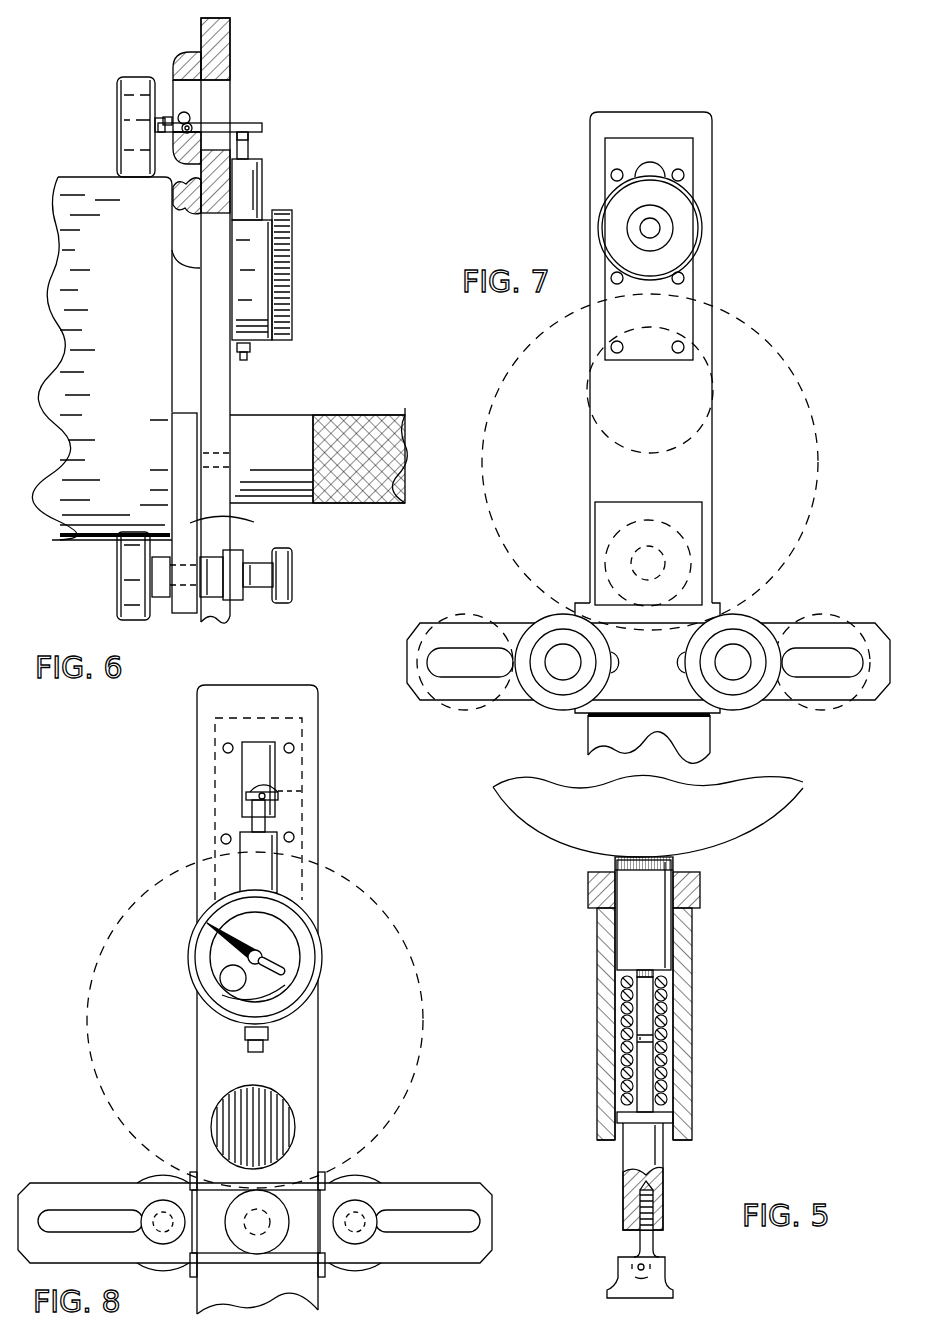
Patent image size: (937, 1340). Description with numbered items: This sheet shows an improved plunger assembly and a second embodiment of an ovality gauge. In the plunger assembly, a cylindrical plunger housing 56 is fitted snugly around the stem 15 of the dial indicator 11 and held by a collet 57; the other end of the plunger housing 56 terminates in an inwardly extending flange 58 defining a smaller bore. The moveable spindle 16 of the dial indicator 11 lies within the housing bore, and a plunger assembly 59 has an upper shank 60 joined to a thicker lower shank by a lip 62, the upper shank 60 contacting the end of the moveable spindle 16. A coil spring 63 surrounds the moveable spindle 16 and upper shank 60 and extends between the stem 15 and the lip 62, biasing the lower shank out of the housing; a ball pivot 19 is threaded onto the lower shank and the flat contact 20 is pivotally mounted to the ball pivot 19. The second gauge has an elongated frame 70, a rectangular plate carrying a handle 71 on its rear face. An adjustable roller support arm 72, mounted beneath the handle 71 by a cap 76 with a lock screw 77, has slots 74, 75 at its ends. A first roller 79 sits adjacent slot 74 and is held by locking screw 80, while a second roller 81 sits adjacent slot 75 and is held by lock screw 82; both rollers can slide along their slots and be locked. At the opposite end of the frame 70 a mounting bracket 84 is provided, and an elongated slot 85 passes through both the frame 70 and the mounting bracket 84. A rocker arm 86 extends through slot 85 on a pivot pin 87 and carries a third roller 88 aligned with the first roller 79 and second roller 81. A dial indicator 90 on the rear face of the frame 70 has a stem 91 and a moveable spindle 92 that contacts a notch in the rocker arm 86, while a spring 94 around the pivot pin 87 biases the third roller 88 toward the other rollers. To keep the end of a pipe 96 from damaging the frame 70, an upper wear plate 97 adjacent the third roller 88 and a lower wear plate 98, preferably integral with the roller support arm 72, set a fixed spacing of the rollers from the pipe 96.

In FIG. 5, the dial indicator 11 is at (764, 818).
In FIG. 5, the stem 15 is at (678, 861).
In FIG. 5, the moveable spindle 16 is at (645, 1006).
In FIG. 5, the ball pivot 19 is at (656, 1245).
In FIG. 5, the flat contact 20 is at (620, 1273).
In FIG. 5, the plunger housing 56 is at (692, 929).
In FIG. 5, the collet 57 is at (700, 890).
In FIG. 5, the flange 58 is at (670, 1143).
In FIG. 5, the plunger assembly 59 is at (624, 1170).
In FIG. 5, the upper shank 60 is at (645, 1071).
In FIG. 5, the lip 62 is at (665, 1116).
In FIG. 5, the coil spring 63 is at (662, 1047).
In FIG. 6, the frame 70 is at (232, 386).
In FIG. 7, the frame 70 is at (713, 185).
In FIG. 8, the frame 70 is at (319, 784).
In FIG. 6, the handle 71 is at (276, 415).
In FIG. 8, the handle 71 is at (290, 1106).
In FIG. 6, the roller support arm 72 is at (225, 522).
In FIG. 7, the roller support arm 72 is at (868, 630).
In FIG. 8, the roller support arm 72 is at (457, 1183).
In FIG. 7, the slot 74 is at (450, 650).
In FIG. 8, the slot 74 is at (466, 1210).
In FIG. 7, the slot 75 is at (826, 650).
In FIG. 8, the slot 75 is at (70, 1210).
In FIG. 6, the cap 76 is at (240, 603).
In FIG. 8, the cap 76 is at (296, 1238).
In FIG. 6, the lock screw 77 is at (292, 578).
In FIG. 8, the lock screw 77 is at (254, 1243).
In FIG. 7, the first roller 79 is at (545, 710).
In FIG. 8, the first roller 79 is at (362, 1178).
In FIG. 8, the locking screw 80 is at (368, 1245).
In FIG. 6, the second roller 81 is at (118, 576).
In FIG. 7, the second roller 81 is at (735, 712).
In FIG. 8, the second roller 81 is at (160, 1172).
In FIG. 6, the lock screw 82 is at (226, 560).
In FIG. 8, the lock screw 82 is at (155, 1237).
In FIG. 6, the mounting bracket 84 is at (185, 58).
In FIG. 7, the mounting bracket 84 is at (693, 150).
In FIG. 8, the mounting bracket 84 is at (258, 809).
In FIG. 6, the slot 85 is at (208, 80).
In FIG. 7, the slot 85 is at (636, 171).
In FIG. 8, the slot 85 is at (276, 763).
In FIG. 6, the rocker arm 86 is at (255, 124).
In FIG. 8, the rocker arm 86 is at (272, 800).
In FIG. 6, the pivot pin 87 is at (198, 122).
In FIG. 8, the pivot pin 87 is at (268, 797).
In FIG. 6, the third roller 88 is at (137, 77).
In FIG. 7, the third roller 88 is at (700, 253).
In FIG. 6, the dial indicator 90 is at (290, 228).
In FIG. 8, the dial indicator 90 is at (255, 957).
In FIG. 6, the stem 91 is at (262, 175).
In FIG. 8, the stem 91 is at (240, 864).
In FIG. 6, the moveable spindle 92 is at (248, 146).
In FIG. 8, the moveable spindle 92 is at (252, 824).
In FIG. 6, the spring 94 is at (176, 120).
In FIG. 8, the spring 94 is at (262, 792).
In FIG. 6, the pipe 96 is at (128, 312).
In FIG. 7, the pipe 96 is at (778, 338).
In FIG. 8, the pipe 96 is at (376, 917).
In FIG. 6, the upper wear plate 97 is at (183, 238).
In FIG. 7, the upper wear plate 97 is at (692, 312).
In FIG. 6, the lower wear plate 98 is at (178, 436).
In FIG. 7, the lower wear plate 98 is at (695, 518).